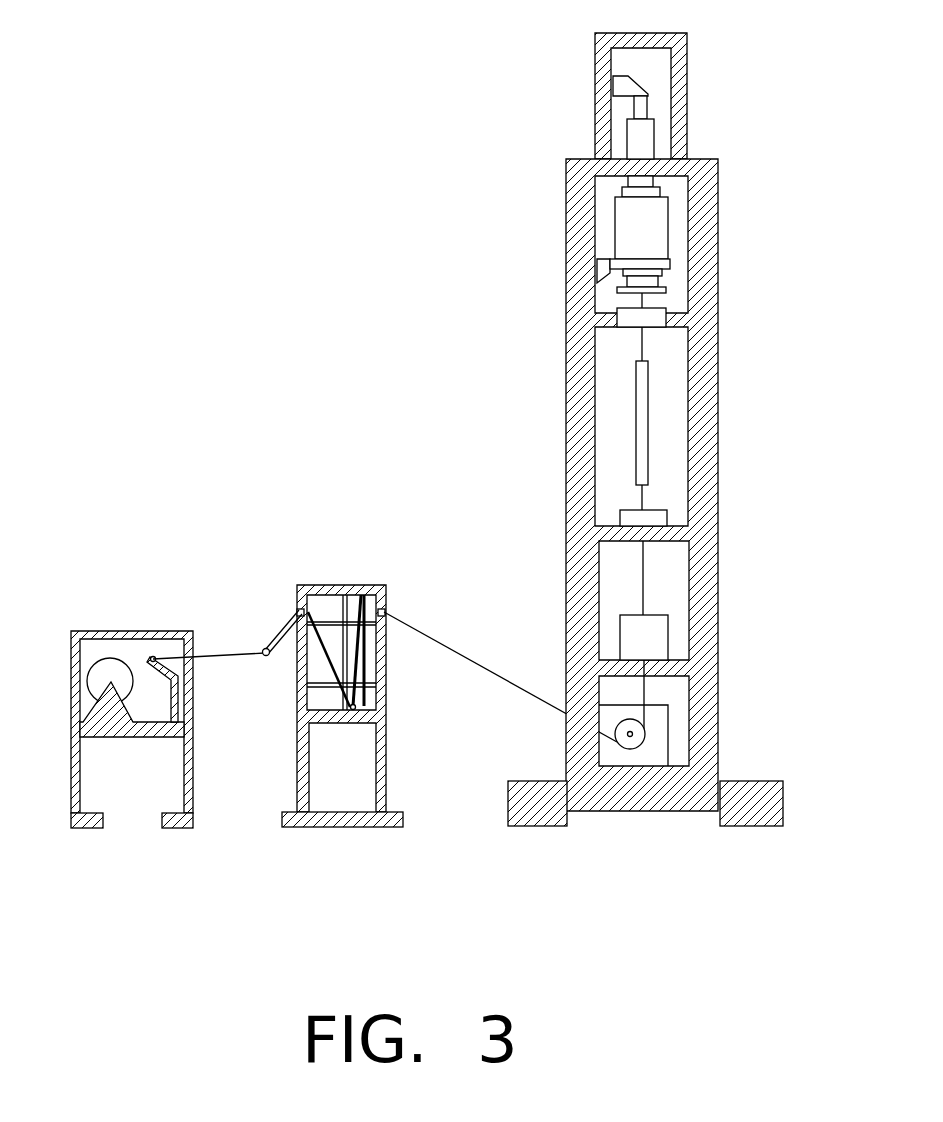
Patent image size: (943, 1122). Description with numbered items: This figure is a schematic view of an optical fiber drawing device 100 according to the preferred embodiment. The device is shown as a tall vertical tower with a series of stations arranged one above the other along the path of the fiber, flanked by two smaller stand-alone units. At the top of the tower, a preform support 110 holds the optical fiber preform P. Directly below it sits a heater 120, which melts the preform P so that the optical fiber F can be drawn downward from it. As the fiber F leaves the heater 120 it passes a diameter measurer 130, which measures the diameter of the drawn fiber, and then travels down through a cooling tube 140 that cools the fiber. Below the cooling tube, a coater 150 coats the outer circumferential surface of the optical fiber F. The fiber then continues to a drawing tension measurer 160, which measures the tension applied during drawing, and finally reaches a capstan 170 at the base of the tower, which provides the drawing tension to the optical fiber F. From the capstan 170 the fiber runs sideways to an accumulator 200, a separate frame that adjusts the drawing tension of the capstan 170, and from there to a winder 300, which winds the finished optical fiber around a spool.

The optical fiber drawing device 100 is at (767, 842).
The preform support 110 is at (622, 87).
The optical fiber preform P is at (647, 135).
The heater 120 is at (628, 222).
The diameter measurer 130 is at (598, 317).
The optical fiber F is at (647, 340).
The cooling tube 140 is at (650, 423).
The coater 150 is at (627, 517).
The drawing tension measurer 160 is at (646, 639).
The capstan 170 is at (638, 758).
The accumulator 200 is at (298, 582).
The winder 300 is at (72, 842).